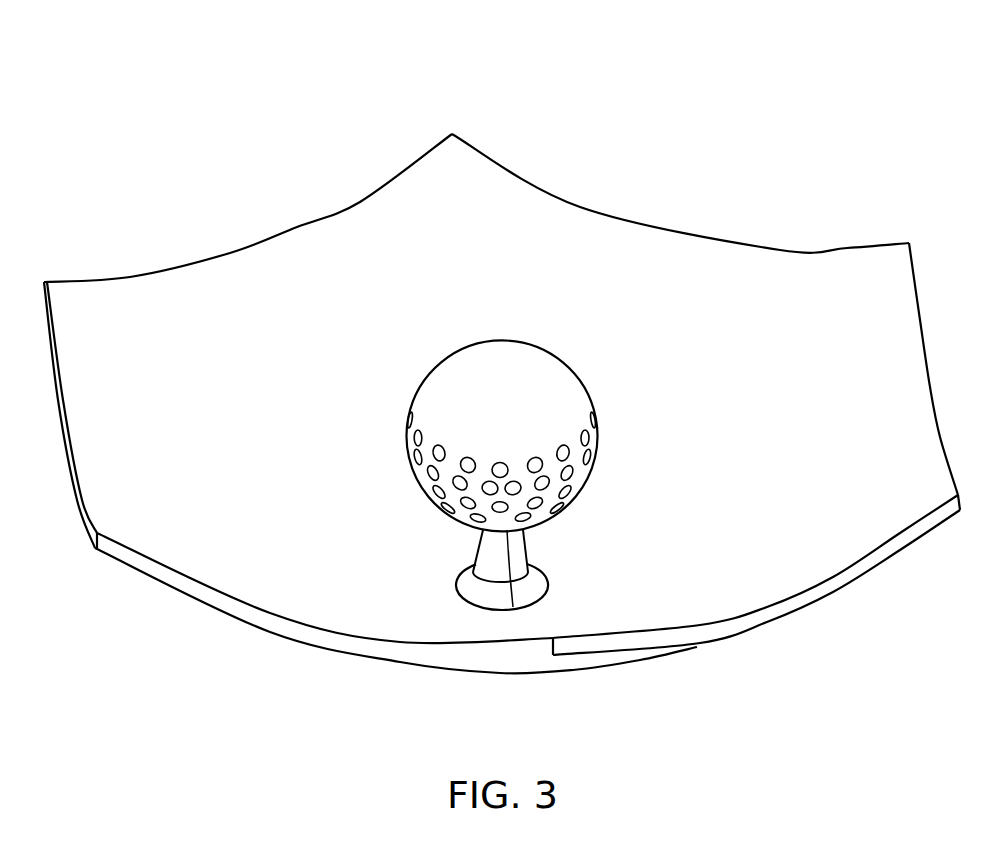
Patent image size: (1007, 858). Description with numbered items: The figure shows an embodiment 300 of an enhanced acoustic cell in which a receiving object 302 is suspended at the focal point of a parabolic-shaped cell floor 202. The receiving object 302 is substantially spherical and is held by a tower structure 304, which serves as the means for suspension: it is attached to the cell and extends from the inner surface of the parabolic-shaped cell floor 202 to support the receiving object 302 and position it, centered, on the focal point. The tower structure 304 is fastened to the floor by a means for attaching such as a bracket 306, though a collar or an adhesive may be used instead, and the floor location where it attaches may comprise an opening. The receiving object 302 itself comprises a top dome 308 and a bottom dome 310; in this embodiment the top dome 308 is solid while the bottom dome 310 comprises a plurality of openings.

The golf ball and tee display assembly 300 is at (502, 350).
The parabolic-shaped cell floor 202 is at (488, 158).
The receiving object 302 is at (572, 378).
The tower structure 304 is at (527, 543).
The bracket 306 is at (462, 582).
The top dome 308 is at (418, 323).
The bottom dome 310 is at (400, 420).